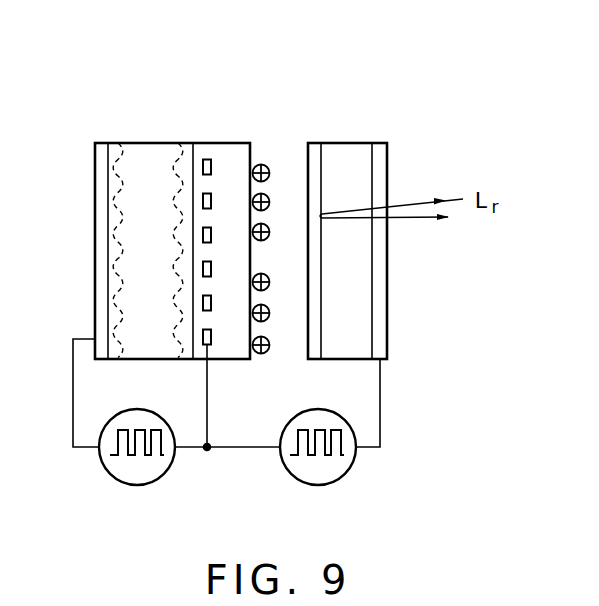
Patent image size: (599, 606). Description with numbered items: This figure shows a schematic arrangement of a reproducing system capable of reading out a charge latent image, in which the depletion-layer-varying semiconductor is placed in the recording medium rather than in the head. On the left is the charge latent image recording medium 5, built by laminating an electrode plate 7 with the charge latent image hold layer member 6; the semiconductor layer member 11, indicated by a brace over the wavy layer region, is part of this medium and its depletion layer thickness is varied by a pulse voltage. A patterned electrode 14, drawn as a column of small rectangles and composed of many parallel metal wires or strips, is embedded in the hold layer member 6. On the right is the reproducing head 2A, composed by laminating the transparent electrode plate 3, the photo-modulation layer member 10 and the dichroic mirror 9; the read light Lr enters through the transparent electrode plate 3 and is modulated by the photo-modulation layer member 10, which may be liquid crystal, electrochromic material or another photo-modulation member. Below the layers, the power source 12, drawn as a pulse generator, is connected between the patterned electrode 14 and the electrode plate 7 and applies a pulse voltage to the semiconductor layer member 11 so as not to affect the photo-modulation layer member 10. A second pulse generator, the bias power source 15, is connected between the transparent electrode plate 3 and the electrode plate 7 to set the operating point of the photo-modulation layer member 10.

The charge latent image recording medium 5 is at (91, 130).
The electrode plate 7 is at (95, 178).
The semiconductor layer member 11 is at (191, 136).
The charge latent image hold layer member 6 is at (240, 163).
The patterned electrode 14 is at (207, 159).
The reproducing head 2A is at (388, 135).
The dichroic mirror 9 is at (310, 142).
The photo-modulation layer member 10 is at (345, 153).
The transparent electrode plate 3 is at (378, 187).
The power source 12 is at (142, 477).
The bias power source 15 is at (340, 470).